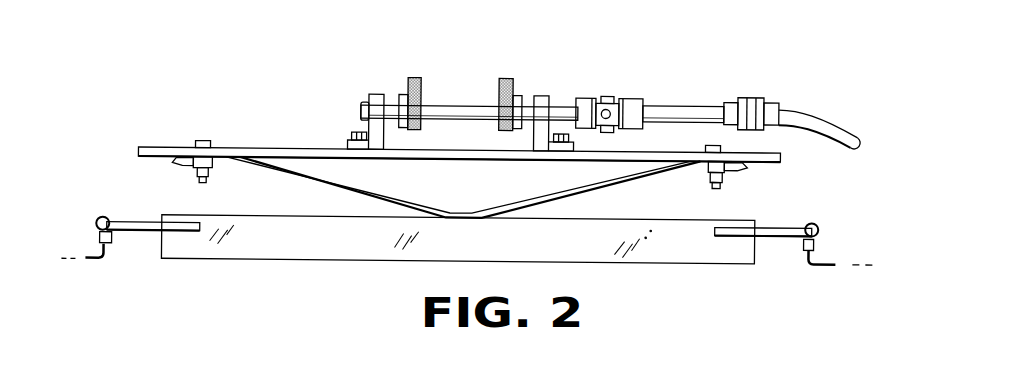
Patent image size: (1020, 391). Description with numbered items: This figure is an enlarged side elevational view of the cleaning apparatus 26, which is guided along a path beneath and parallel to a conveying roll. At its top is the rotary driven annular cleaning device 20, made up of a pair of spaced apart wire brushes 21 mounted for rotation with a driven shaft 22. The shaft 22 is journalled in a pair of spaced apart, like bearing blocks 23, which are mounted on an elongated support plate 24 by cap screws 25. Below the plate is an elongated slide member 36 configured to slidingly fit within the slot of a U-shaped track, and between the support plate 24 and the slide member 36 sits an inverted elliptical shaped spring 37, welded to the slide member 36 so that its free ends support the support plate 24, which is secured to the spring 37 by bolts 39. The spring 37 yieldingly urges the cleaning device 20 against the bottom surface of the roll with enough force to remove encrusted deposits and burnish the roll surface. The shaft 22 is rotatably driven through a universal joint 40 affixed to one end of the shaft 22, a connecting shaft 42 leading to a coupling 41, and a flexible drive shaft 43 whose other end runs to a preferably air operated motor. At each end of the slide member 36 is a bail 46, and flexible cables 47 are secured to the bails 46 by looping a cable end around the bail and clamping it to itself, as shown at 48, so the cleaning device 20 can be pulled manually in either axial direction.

The rotary driven annular cleaning device 20 is at (527, 72).
The wire brushes 21 is at (417, 80).
The driven shaft 22 is at (450, 110).
The bearing blocks 23 is at (375, 97).
The support plate 24 is at (273, 152).
The cap screws 25 is at (355, 130).
The cleaning apparatus 26 is at (648, 62).
The slide member 36 is at (267, 253).
The inverted elliptical shaped spring 37 is at (317, 173).
The bolts 39 is at (202, 140).
The universal joint 40 is at (640, 102).
The coupling 41 is at (752, 100).
The connecting shaft 42 is at (690, 108).
The flexible drive shaft 43 is at (840, 127).
The bails 46 is at (147, 223).
The flexible cables 47 is at (95, 258).
The cable clamp 48 is at (102, 240).